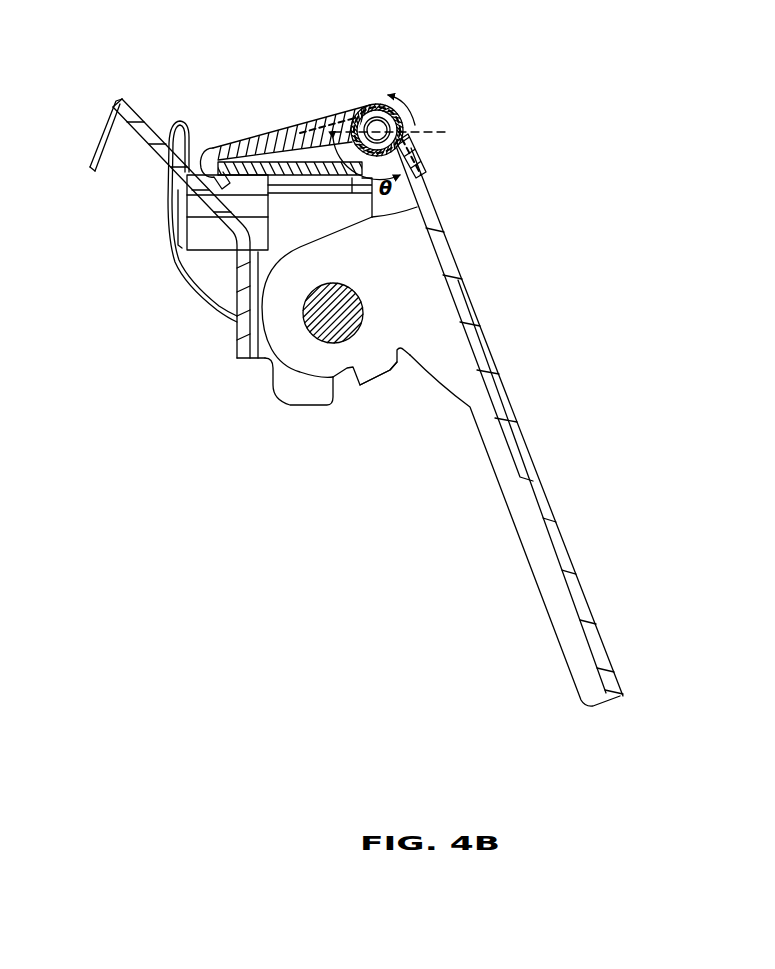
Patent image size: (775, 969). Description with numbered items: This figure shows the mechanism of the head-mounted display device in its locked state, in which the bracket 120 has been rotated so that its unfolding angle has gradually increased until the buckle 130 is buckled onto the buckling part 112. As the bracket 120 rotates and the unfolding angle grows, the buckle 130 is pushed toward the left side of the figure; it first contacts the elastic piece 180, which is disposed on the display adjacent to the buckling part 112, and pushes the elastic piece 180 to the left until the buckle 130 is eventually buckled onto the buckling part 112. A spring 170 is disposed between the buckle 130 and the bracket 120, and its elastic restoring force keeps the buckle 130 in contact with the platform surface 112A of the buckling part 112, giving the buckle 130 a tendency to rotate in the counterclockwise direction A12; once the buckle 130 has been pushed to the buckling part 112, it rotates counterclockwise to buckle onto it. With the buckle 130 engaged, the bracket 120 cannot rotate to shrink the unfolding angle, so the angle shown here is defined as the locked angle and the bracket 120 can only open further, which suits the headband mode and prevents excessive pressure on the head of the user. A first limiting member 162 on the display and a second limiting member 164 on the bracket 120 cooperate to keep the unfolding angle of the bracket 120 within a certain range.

The buckling part 112 is at (256, 162).
The platform surface 112A is at (289, 158).
The bracket 120 is at (476, 338).
The buckle 130 is at (322, 112).
The first limiting member 162 is at (312, 385).
The second limiting member 164 is at (380, 364).
The spring 170 is at (410, 167).
The elastic piece 180 is at (183, 288).
The counterclockwise direction A12 is at (400, 105).